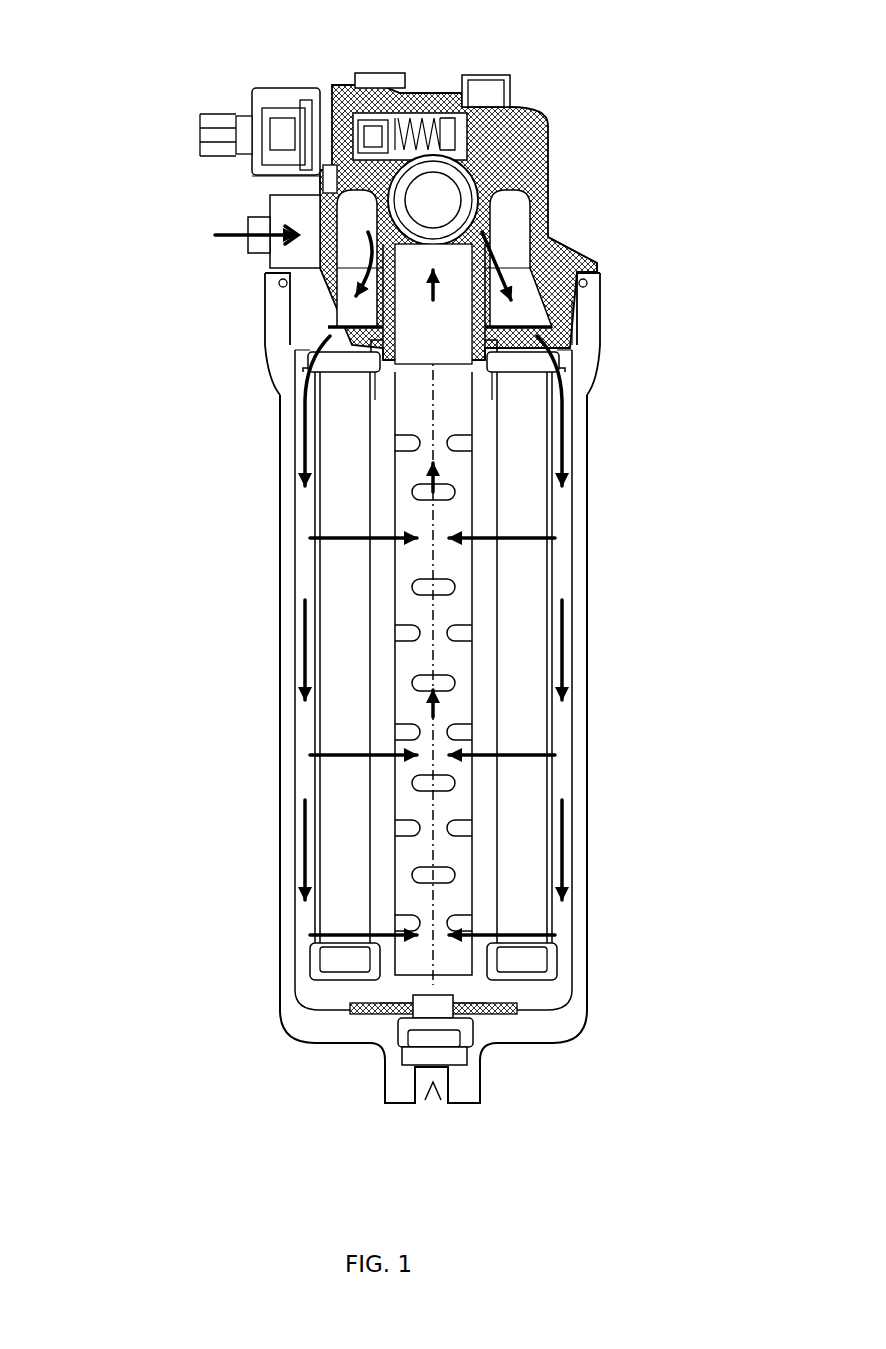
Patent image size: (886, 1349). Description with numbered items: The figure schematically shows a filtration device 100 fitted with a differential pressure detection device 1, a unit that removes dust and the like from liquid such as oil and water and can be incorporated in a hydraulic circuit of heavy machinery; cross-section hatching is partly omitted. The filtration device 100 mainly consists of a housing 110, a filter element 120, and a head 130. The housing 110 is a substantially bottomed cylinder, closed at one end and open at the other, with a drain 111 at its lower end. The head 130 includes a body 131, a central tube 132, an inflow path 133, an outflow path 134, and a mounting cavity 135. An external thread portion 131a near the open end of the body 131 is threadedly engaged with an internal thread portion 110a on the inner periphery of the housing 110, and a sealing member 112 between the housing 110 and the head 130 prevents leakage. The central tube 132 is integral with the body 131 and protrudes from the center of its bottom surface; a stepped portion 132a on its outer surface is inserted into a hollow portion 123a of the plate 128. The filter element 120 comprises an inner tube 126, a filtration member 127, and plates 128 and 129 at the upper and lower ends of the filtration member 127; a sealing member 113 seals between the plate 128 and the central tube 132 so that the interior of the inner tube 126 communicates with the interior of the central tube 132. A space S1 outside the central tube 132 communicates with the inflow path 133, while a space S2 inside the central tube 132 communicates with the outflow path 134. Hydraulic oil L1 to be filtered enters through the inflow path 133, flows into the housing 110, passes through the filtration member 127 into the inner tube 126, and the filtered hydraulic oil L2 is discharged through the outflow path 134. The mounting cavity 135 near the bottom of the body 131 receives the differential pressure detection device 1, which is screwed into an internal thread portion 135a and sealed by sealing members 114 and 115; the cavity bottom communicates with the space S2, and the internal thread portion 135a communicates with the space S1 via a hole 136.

The filtration device 100 is at (780, 57).
The differential pressure detection device 1 is at (262, 83).
The housing 110 is at (595, 600).
The internal thread portion 110a is at (560, 355).
The drain 111 is at (436, 1090).
The sealing member 112 is at (275, 290).
The sealing member 113 is at (595, 375).
The sealing member 114 is at (330, 88).
The sealing member 115 is at (412, 92).
The filter element 120 is at (560, 565).
The hollow portion 123a is at (375, 358).
The inner tube 126 is at (335, 642).
The filtration member 127 is at (345, 618).
The plate 128 is at (372, 380).
The plate 129 is at (325, 975).
The head 130 is at (520, 128).
The body 131 is at (585, 292).
The external thread portion 131a is at (595, 330).
The central tube 132 is at (560, 266).
The stepped portion 132a is at (375, 340).
The inflow path 133 is at (248, 222).
The outflow path 134 is at (452, 198).
The mounting cavity 135 is at (466, 78).
The internal thread portion 135a is at (352, 95).
The hole 136 is at (250, 185).
The space S1 is at (330, 306).
The space S2 is at (500, 245).
The hydraulic oil L1 is at (633, 775).
The hydraulic oil L2 is at (415, 775).